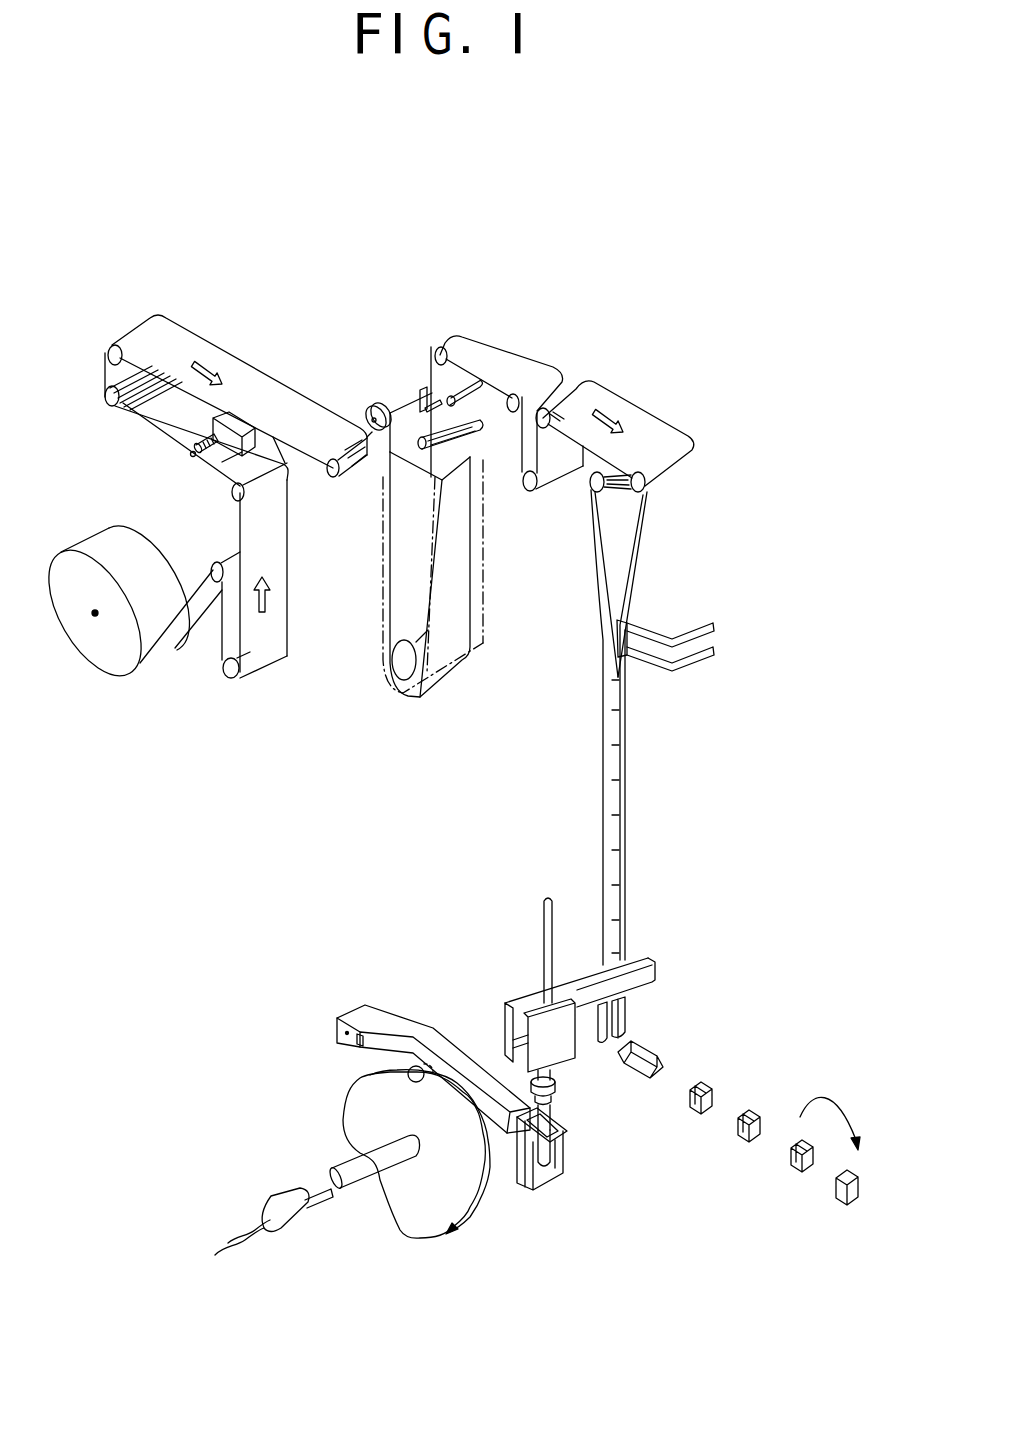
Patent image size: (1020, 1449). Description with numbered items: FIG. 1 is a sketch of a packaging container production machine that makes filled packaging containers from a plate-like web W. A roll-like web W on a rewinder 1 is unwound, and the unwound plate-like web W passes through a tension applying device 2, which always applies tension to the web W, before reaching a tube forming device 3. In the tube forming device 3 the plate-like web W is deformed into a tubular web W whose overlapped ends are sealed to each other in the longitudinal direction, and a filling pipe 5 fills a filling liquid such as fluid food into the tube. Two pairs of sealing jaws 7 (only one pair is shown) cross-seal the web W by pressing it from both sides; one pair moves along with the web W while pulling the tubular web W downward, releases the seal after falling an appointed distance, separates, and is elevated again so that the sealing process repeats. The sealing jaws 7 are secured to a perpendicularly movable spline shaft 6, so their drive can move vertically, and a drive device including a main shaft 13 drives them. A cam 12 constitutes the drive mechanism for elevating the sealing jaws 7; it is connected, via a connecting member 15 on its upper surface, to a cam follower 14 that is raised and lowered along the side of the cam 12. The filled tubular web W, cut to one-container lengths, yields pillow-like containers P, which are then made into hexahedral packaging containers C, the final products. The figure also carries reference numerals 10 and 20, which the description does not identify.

The rewinder 1 is at (145, 690).
The web W is at (158, 327).
The tension applying device 2 is at (503, 294).
The tube forming device 3 is at (656, 738).
The filling pipe 5 is at (670, 640).
The spline shaft 6 is at (542, 957).
The sealing jaws 7 is at (627, 950).
The holder 10 is at (555, 1082).
The cam 12 is at (473, 1187).
The main shaft 13 is at (347, 1163).
The cam follower 14 is at (363, 1015).
The connecting member 15 is at (563, 1160).
The drive 20 is at (277, 1207).
The pillow-like container P is at (655, 1048).
The hexahedral packaging container C is at (833, 1197).